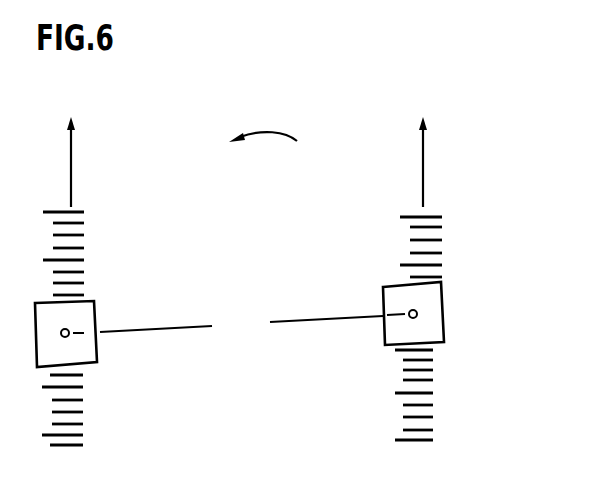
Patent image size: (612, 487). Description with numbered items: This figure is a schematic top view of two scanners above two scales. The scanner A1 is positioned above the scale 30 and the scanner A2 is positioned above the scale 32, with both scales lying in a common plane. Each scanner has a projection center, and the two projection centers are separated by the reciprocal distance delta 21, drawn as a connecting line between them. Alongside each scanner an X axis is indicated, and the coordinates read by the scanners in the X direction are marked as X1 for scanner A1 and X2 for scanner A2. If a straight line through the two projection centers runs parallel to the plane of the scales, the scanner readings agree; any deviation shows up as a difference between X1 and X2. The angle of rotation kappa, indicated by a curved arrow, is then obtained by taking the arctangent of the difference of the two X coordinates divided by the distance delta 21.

The scale 30 is at (463, 215).
The scale 32 is at (84, 236).
The scanner A1 is at (471, 284).
The scanner A2 is at (120, 310).
The X coordinate of first scanner X1 is at (475, 348).
The X coordinate of second scanner X2 is at (69, 336).
The reciprocal distance 21 is at (241, 329).
The angle of rotation kappa is at (263, 151).